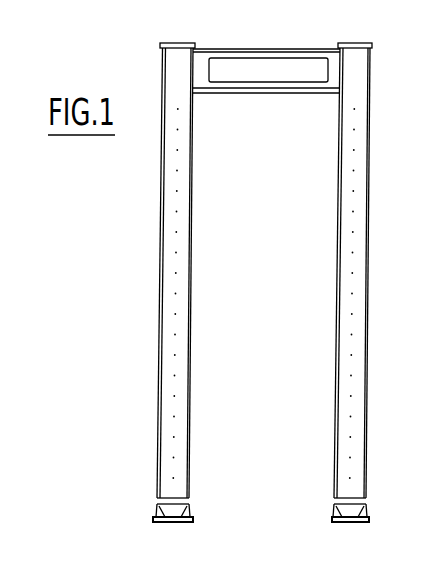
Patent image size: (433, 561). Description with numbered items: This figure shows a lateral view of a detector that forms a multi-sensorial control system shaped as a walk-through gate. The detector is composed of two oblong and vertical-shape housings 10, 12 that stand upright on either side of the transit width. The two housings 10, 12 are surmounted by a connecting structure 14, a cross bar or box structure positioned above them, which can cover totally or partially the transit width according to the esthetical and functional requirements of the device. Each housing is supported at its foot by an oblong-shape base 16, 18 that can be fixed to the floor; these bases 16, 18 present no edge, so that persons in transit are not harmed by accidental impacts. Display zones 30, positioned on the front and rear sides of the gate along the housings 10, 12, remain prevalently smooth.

The housing 10 is at (148, 358).
The housing 12 is at (328, 373).
The connecting structure 14 is at (335, 58).
The base 16 is at (148, 520).
The base 18 is at (356, 522).
The display zones 30 is at (350, 187).